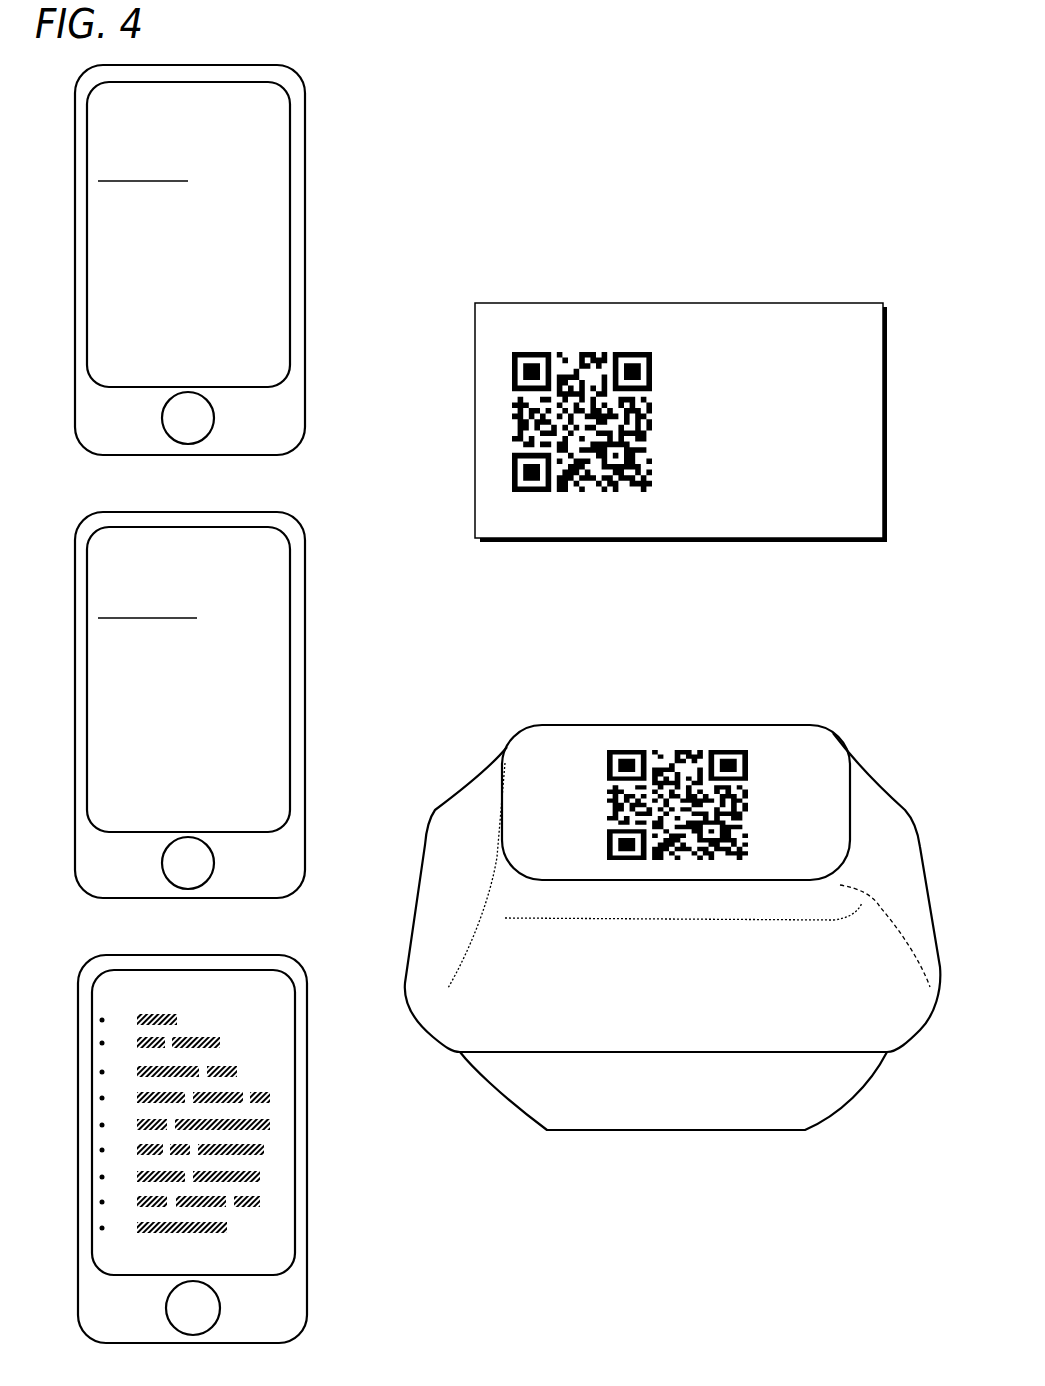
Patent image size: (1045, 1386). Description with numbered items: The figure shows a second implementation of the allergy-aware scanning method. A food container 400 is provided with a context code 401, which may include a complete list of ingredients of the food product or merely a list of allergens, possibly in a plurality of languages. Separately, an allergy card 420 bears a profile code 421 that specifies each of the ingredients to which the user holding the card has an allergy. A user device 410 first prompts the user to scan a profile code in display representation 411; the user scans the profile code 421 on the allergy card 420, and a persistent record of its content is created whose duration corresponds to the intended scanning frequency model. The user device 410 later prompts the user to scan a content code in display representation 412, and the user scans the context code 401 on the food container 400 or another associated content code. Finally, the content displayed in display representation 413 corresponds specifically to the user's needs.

The food container 400 is at (673, 908).
The context code 401 is at (673, 758).
The user device 410 is at (215, 704).
The display representation 411 is at (268, 148).
The display representation 412 is at (268, 548).
The display representation 413 is at (258, 1250).
The allergy card 420 is at (681, 359).
The profile code 421 is at (602, 347).